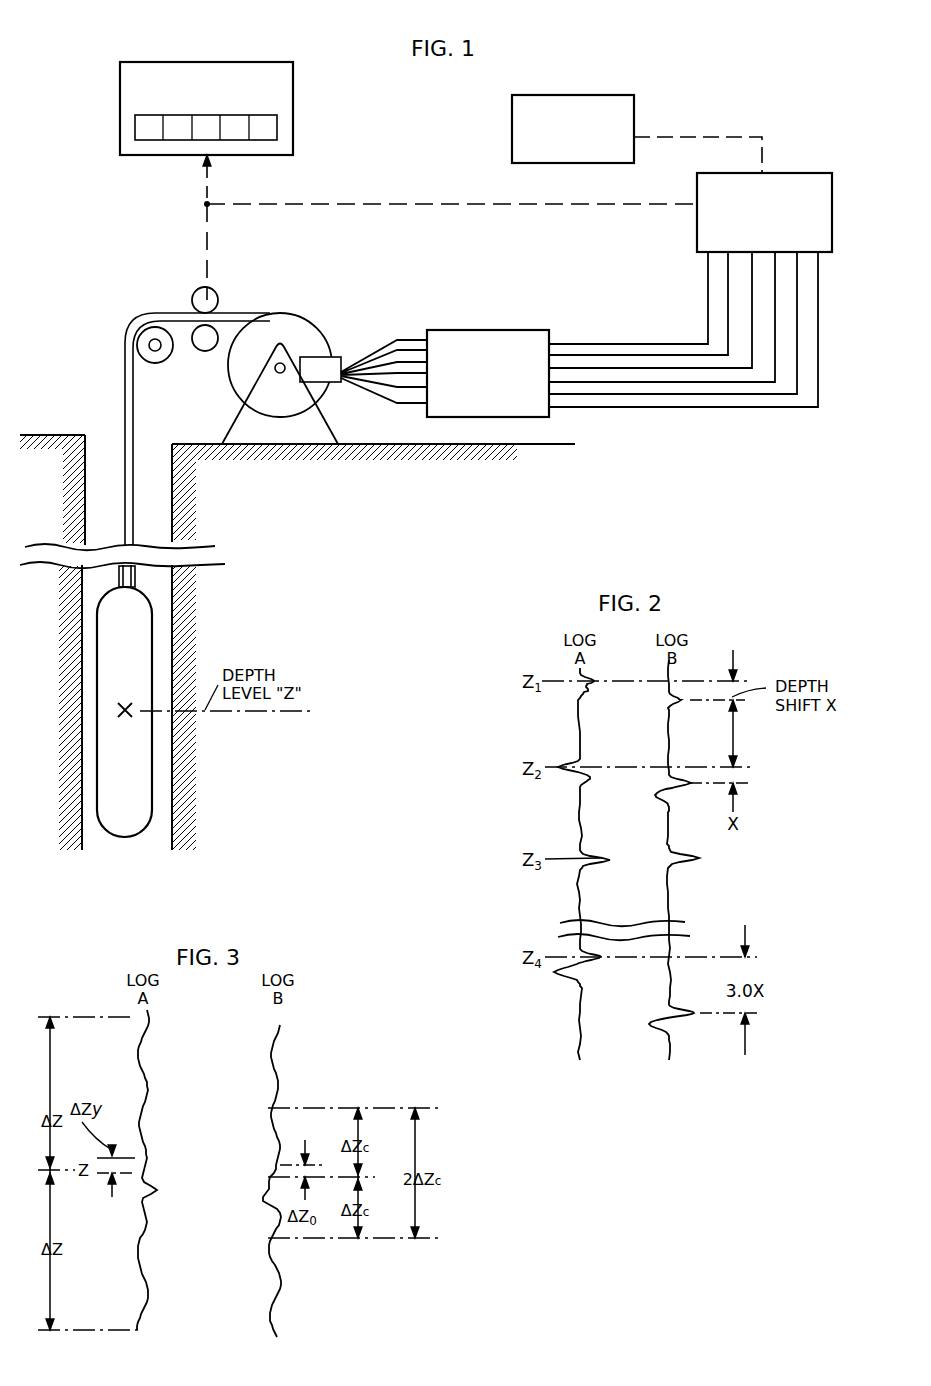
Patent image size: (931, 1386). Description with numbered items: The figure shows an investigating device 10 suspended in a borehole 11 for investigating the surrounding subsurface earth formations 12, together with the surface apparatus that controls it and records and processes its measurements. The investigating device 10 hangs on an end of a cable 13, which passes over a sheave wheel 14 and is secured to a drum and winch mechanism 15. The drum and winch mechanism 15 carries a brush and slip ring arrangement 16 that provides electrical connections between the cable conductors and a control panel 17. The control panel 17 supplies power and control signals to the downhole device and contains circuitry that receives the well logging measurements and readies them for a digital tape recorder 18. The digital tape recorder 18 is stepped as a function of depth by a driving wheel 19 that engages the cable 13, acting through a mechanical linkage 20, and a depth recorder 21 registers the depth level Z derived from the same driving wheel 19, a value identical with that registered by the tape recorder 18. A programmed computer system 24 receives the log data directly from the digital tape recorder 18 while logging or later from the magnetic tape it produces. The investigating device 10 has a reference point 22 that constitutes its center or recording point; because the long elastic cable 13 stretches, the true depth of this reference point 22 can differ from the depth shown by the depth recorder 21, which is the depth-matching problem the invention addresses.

The investigating device 10 is at (110, 645).
The borehole 11 is at (168, 606).
The subsurface earth formations 12 is at (225, 784).
The cable 13 is at (133, 466).
The sheave wheel 14 is at (158, 356).
The drum and winch mechanism 15 is at (300, 430).
The brush and slip ring arrangement 16 is at (277, 336).
The control panel 17 is at (507, 338).
The digital tape recorder 18 is at (711, 193).
The driving wheel 19 is at (210, 300).
The mechanical linkage 20 is at (490, 205).
The depth recorder 21 is at (275, 90).
The reference point 22 is at (125, 717).
The computer system 24 is at (632, 115).